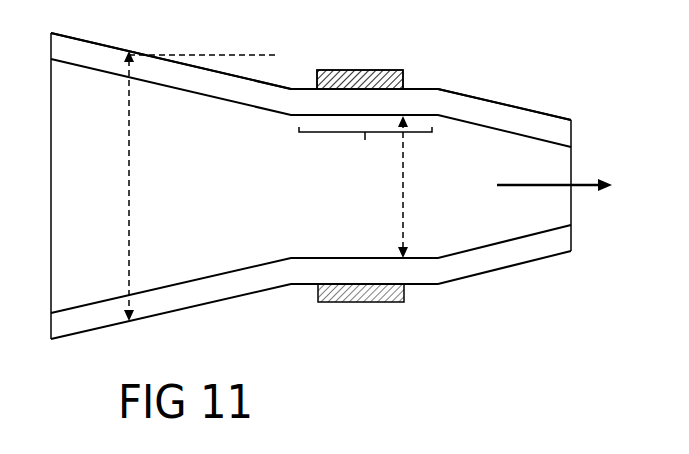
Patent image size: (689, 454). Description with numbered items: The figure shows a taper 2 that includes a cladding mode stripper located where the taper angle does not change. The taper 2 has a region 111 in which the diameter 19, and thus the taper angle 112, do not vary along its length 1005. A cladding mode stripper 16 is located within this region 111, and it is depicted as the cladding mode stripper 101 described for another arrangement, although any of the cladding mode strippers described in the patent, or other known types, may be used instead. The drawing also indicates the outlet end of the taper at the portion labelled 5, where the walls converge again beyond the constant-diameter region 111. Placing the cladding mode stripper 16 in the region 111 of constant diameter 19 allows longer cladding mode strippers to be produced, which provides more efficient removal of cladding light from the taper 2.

The taper 2 is at (73, 333).
The outlet section 5 is at (513, 107).
The cladding mode stripper 16 is at (335, 70).
The diameter 19 is at (129, 201).
The cladding mode stripper 101 is at (360, 70).
The region 111 is at (344, 131).
The taper angle 112 is at (239, 60).
The length 1005 is at (525, 187).